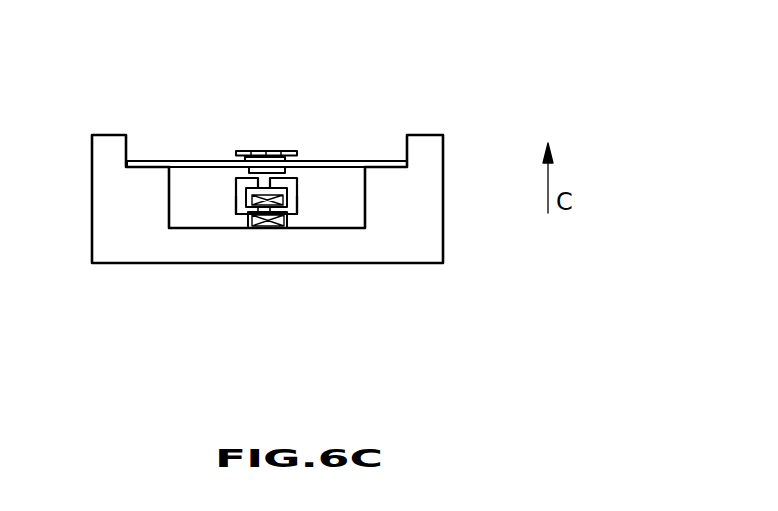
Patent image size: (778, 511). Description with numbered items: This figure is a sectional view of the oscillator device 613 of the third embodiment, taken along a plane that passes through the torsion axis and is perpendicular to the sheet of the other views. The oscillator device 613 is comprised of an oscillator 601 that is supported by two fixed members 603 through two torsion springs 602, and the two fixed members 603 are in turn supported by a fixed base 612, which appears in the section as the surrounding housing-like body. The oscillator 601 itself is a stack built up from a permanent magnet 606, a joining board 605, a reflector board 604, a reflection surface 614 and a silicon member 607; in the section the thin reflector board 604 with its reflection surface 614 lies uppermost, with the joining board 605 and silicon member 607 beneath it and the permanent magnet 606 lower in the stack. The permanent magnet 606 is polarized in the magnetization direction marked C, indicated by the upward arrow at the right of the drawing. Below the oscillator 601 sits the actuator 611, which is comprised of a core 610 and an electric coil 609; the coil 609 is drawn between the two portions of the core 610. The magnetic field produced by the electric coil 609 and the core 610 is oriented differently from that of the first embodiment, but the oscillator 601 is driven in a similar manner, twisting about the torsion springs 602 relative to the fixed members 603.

The oscillator 601 is at (393, 32).
The torsion spring 602 is at (188, 161).
The fixed member 603 is at (136, 161).
The reflector board 604 is at (250, 155).
The joining board 605 is at (265, 155).
The permanent magnet 606 is at (283, 177).
The silicon member 607 is at (274, 162).
The electric coil 609 is at (260, 208).
The core 610 is at (243, 205).
The actuator 611 is at (333, 330).
The fixed base 612 is at (412, 248).
The oscillator device 613 is at (90, 70).
The reflection surface 614 is at (241, 151).